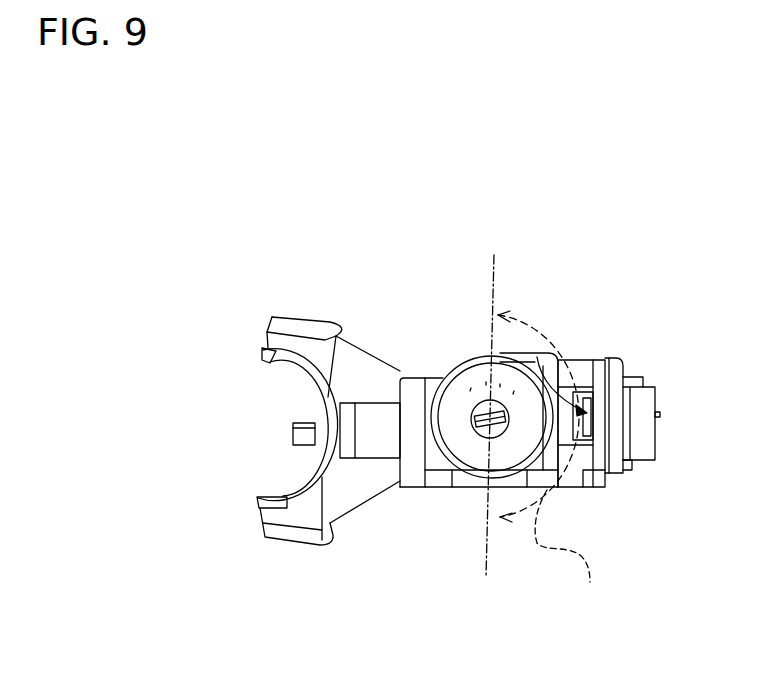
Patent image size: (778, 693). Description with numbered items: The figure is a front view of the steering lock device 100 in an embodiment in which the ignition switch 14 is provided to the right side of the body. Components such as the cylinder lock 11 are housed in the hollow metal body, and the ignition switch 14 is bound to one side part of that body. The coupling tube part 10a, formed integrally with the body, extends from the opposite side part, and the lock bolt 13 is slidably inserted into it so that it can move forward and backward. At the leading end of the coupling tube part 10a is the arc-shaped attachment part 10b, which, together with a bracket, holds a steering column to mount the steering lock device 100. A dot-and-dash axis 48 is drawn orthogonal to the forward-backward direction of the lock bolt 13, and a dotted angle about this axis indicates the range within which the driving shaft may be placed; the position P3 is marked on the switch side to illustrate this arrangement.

The steering lock device 100 is at (437, 362).
The cylinder lock 11 is at (467, 443).
The axis 48 is at (484, 547).
The rotation position P3 is at (540, 340).
The ignition switch 14 is at (615, 367).
The coupling tube part 10a is at (352, 357).
The attachment part 10b is at (283, 512).
The lock bolt 13 is at (300, 433).